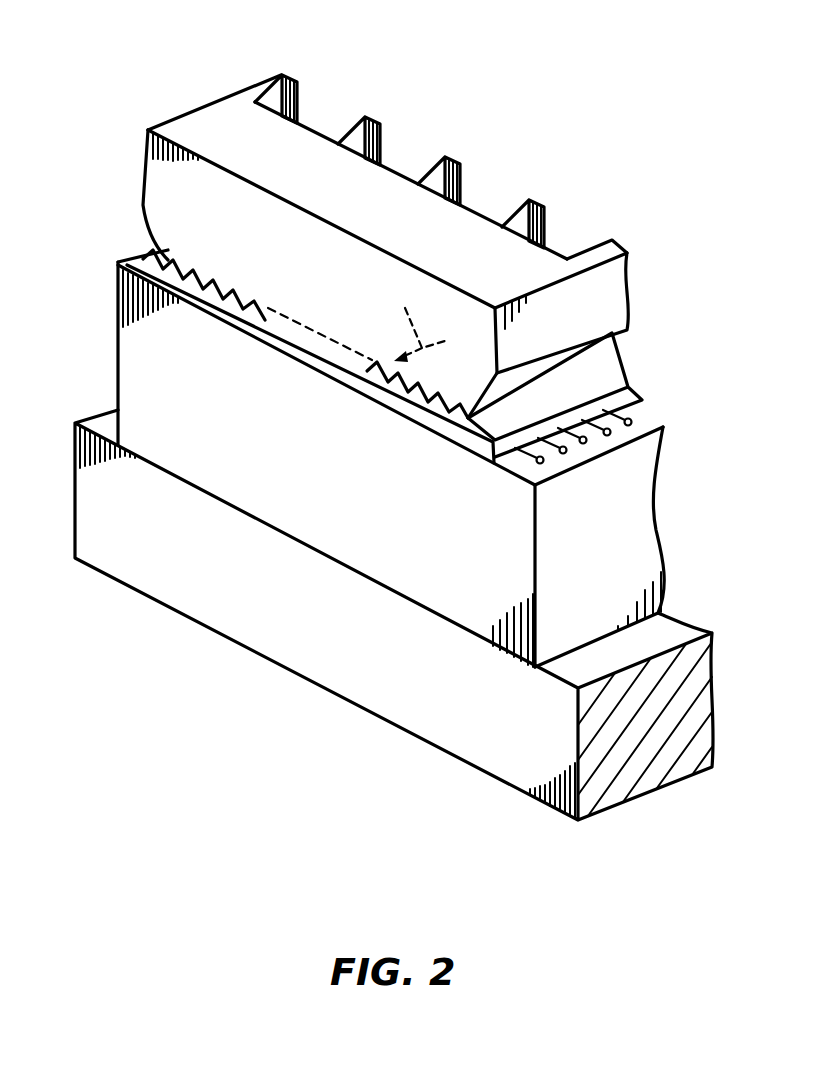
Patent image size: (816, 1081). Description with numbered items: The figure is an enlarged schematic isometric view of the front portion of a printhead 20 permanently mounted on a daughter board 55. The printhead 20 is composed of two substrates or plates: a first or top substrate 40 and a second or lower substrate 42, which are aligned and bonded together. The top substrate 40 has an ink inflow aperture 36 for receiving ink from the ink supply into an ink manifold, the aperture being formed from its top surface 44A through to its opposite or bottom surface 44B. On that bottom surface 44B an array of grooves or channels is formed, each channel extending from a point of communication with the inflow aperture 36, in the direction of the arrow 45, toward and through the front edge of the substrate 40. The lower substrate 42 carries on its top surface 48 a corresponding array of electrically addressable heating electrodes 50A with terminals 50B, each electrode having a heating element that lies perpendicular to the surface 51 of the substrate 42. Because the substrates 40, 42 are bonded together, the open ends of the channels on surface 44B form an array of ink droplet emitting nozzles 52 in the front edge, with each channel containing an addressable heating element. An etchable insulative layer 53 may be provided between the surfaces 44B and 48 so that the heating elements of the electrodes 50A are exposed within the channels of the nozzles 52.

The printhead 20 is at (204, 66).
The first substrate 40 is at (143, 153).
The ink inflow aperture 36 is at (305, 122).
The top surface 44A is at (610, 242).
The bottom surface 44B is at (545, 397).
The arrow 45 is at (419, 323).
The top surface 48 is at (643, 420).
The heating electrodes 50A is at (630, 410).
The terminals 50B is at (617, 425).
The second substrate 42 is at (638, 540).
The surface 51 is at (323, 530).
The ink droplet emitting nozzles 52 is at (227, 298).
The insulative layer 53 is at (313, 358).
The daughter board 55 is at (180, 587).